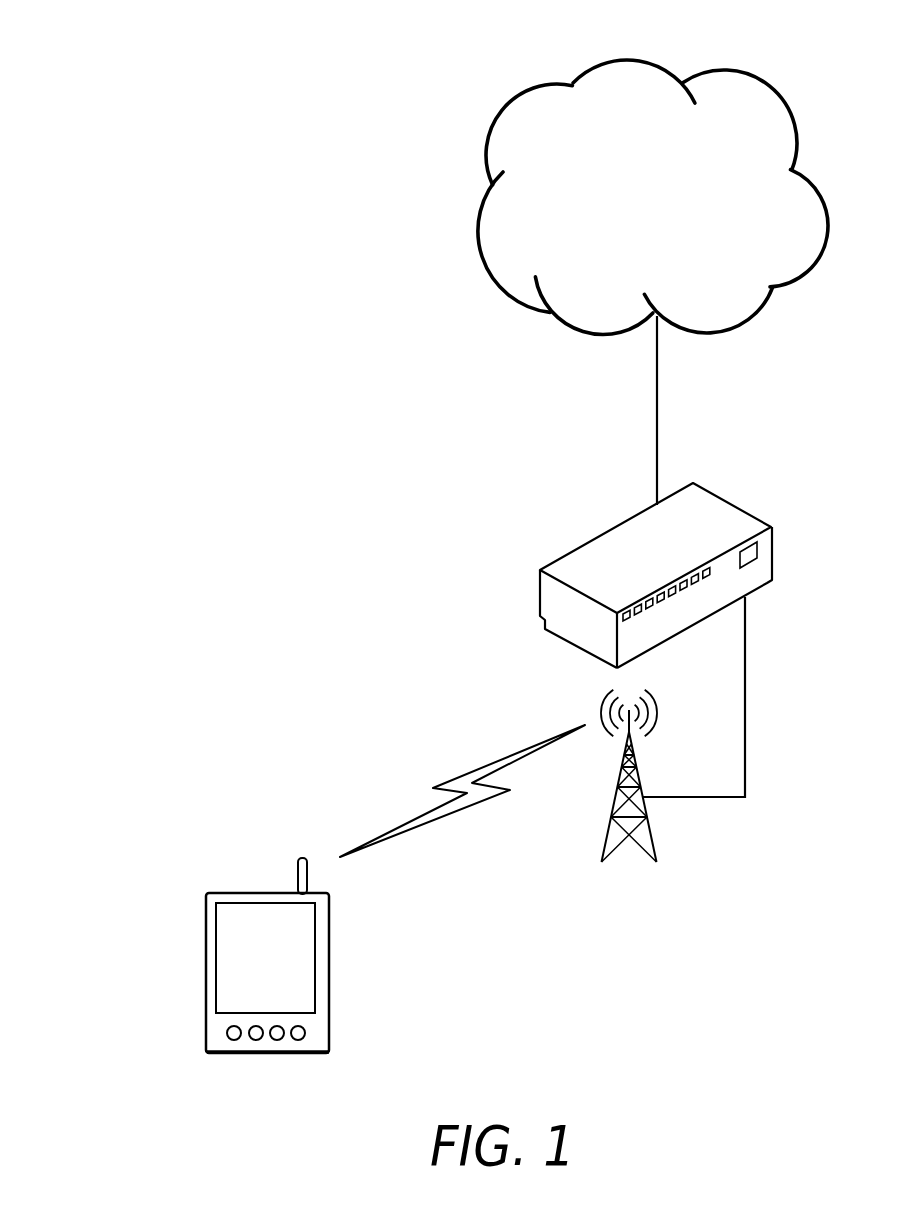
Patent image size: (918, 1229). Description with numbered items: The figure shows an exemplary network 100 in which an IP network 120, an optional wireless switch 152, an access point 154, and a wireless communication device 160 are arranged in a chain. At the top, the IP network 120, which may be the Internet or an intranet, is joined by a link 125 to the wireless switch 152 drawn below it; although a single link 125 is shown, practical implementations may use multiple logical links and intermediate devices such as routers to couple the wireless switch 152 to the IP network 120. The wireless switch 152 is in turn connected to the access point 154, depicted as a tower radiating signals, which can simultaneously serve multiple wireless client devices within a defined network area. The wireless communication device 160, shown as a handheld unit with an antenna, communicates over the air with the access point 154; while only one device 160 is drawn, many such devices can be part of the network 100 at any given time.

The network 100 is at (100, 50).
The IP network 120 is at (505, 105).
The link 125 is at (656, 412).
The wireless switch 152 is at (733, 502).
The access point 154 is at (650, 822).
The wireless communication device 160 is at (206, 975).